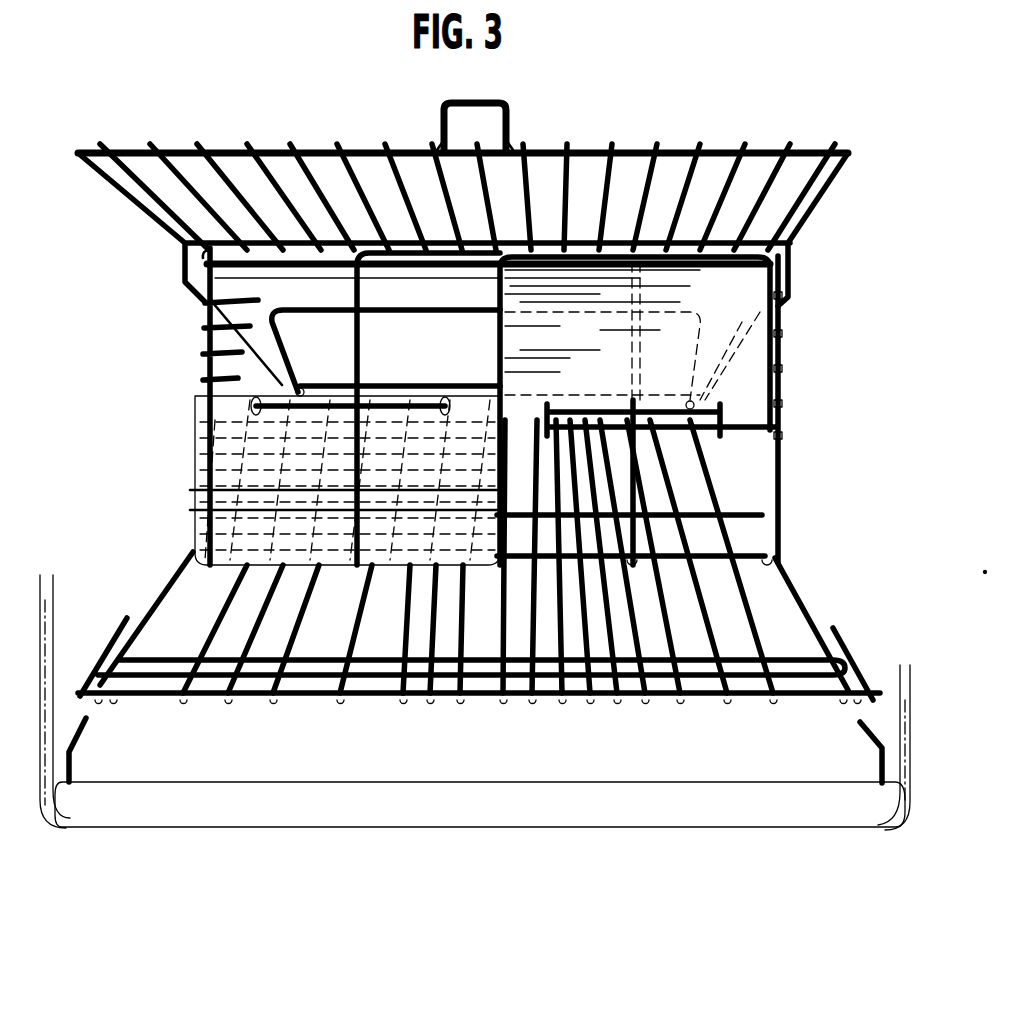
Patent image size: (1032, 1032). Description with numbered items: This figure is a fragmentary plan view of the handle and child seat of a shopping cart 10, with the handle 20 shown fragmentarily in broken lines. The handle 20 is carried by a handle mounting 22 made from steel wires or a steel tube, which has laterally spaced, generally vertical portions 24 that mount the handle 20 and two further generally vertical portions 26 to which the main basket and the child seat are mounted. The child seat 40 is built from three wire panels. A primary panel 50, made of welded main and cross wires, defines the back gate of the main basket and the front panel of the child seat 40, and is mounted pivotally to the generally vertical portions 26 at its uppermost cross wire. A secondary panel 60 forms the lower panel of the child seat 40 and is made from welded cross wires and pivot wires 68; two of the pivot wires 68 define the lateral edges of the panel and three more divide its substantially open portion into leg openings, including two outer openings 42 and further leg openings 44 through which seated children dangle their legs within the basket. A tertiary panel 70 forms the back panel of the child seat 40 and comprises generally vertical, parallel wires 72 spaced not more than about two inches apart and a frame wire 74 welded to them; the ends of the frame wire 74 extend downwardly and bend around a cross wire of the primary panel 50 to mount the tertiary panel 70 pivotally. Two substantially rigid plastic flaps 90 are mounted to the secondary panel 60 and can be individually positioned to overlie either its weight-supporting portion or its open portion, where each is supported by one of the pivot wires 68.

The shopping cart 10 is at (478, 770).
The handle 20 is at (77, 836).
The handle mounting 22 is at (912, 665).
The generally vertical portions 24 is at (872, 752).
The generally vertical portions 26 is at (530, 822).
The child seat 40 is at (506, 406).
The outer openings 42 is at (328, 351).
The leg openings 44 is at (417, 356).
The primary panel 50 is at (806, 577).
The secondary panel 60 is at (792, 313).
The pivot wires 68 is at (200, 510).
The tertiary panel 70 is at (488, 165).
The generally vertical wires 72 is at (686, 178).
The frame wire 74 is at (553, 150).
The plastic flaps 90 is at (750, 287).